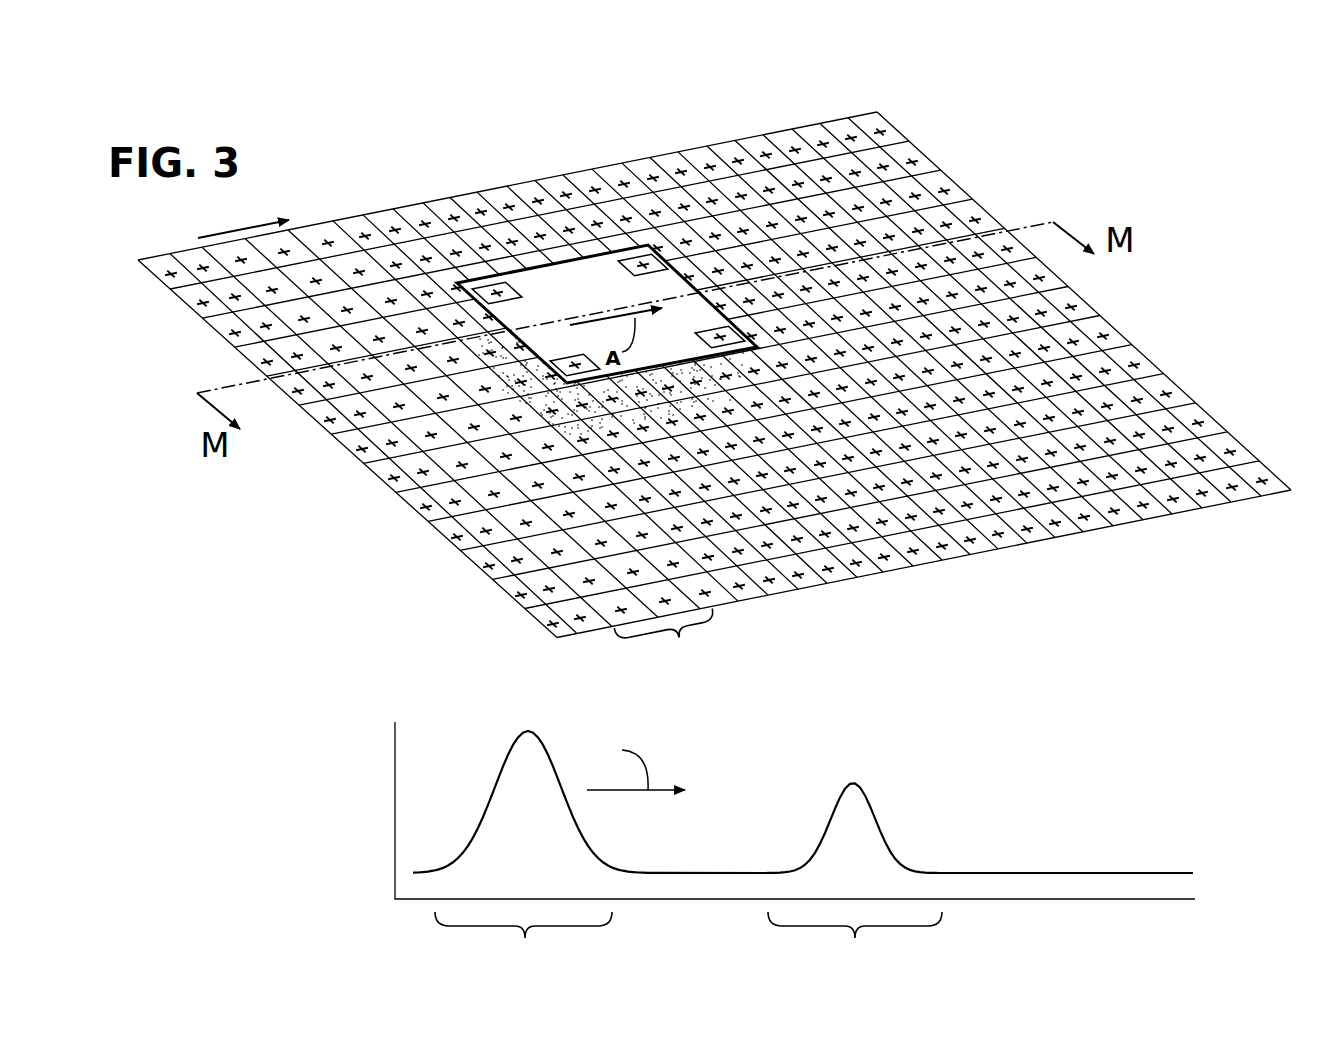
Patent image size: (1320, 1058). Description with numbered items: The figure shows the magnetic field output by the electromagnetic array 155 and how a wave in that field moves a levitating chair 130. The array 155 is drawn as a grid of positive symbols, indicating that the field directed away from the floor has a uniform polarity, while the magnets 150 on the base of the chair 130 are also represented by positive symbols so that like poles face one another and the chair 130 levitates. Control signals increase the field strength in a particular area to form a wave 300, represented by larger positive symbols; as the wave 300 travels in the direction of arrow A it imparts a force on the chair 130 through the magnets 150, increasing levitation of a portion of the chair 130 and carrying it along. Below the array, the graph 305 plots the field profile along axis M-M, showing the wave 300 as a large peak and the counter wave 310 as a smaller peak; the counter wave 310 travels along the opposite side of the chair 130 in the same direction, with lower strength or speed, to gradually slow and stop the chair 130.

The electromagnetic array 155 is at (348, 125).
The chair 130 is at (568, 292).
The magnets 150 is at (477, 286).
The wave 300 is at (576, 786).
The graph 305 is at (395, 762).
The counter wave 310 is at (855, 938).